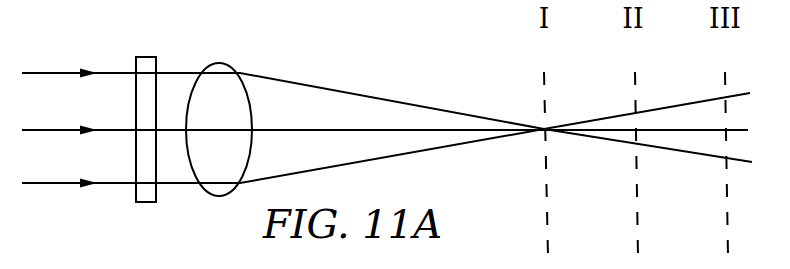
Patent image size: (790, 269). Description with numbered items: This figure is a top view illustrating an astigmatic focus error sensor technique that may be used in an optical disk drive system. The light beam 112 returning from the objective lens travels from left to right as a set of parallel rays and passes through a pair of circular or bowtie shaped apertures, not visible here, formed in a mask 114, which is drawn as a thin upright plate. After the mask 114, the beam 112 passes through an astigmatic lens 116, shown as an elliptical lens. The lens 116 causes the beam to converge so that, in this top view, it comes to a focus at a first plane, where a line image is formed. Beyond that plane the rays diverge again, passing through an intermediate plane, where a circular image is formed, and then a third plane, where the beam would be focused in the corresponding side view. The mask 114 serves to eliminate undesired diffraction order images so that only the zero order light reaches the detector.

The light beam 112 is at (115, 72).
The mask 114 is at (143, 56).
The astigmatic lens 116 is at (235, 67).